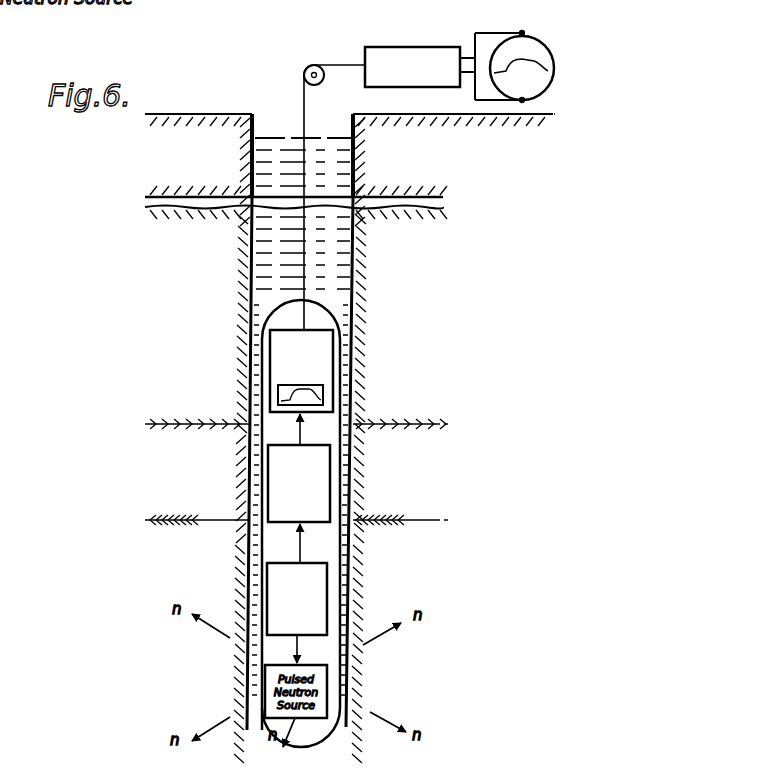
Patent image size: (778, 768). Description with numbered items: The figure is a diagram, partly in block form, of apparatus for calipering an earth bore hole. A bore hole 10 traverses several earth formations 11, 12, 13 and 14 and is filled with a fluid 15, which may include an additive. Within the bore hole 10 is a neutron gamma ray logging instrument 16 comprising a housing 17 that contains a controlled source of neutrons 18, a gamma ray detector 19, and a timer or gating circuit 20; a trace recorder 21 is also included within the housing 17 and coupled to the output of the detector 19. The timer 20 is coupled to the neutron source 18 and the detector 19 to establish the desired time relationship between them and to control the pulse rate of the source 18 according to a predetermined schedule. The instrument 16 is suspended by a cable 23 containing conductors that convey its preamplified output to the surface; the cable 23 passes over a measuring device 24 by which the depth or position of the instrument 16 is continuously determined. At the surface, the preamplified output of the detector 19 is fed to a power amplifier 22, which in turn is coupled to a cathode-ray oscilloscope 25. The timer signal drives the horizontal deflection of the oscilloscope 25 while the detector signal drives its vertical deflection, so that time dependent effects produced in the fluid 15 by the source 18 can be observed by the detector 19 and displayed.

The bore hole 10 is at (352, 262).
The earth formation 11 is at (455, 155).
The earth formation 12 is at (454, 282).
The earth formation 13 is at (439, 479).
The earth formation 14 is at (422, 674).
The fluid 15 is at (250, 151).
The neutron gamma ray logging instrument 16 is at (341, 351).
The housing 17 is at (341, 387).
The controlled source of neutrons 18 is at (318, 738).
The gamma ray detector 19 is at (268, 480).
The timer or gating circuit 20 is at (267, 591).
The trace recorder 21 is at (270, 358).
The power amplifier 22 is at (416, 46).
The cable 23 is at (304, 97).
The measuring device 24 is at (316, 64).
The cathode-ray oscilloscope 25 is at (546, 54).